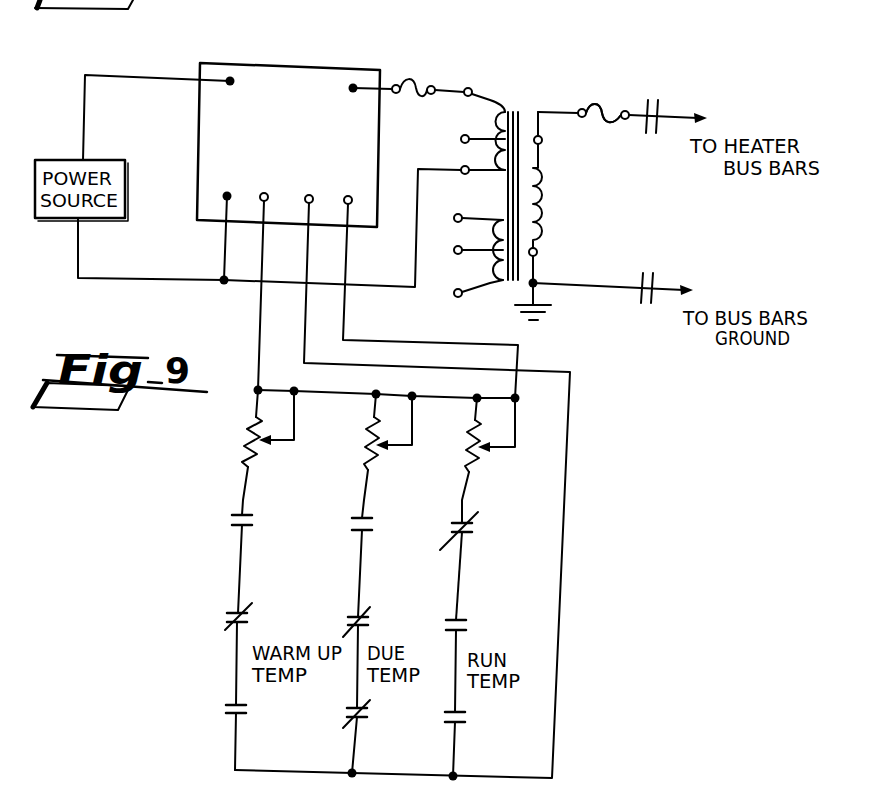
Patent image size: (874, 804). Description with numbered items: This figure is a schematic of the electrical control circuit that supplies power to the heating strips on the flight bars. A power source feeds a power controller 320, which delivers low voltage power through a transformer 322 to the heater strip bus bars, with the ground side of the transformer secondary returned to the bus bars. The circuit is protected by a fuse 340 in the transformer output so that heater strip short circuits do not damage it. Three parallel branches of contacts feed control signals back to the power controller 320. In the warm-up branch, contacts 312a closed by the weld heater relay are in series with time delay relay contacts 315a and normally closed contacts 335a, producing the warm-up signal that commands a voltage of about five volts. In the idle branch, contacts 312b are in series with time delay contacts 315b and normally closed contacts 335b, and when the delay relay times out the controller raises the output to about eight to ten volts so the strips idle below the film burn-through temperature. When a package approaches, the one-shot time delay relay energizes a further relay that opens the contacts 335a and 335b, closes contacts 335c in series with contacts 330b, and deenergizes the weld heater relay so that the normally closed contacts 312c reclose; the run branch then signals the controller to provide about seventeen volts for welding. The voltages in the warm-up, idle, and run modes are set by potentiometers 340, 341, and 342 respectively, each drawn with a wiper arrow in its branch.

The power controller 320 is at (323, 63).
The transformer 322 is at (511, 110).
The fuse / potentiometer 340 is at (600, 103).
The potentiometer 341 is at (365, 440).
The potentiometer 342 is at (463, 443).
The contacts 312a is at (233, 520).
The contacts 312b is at (367, 513).
The normally closed contacts 312c is at (475, 527).
The normally closed contacts 335a is at (228, 617).
The normally closed contacts 335b is at (365, 620).
The contacts 335c is at (468, 623).
The contacts 315a is at (227, 704).
The contacts 315b is at (363, 715).
The contacts 330b is at (465, 715).